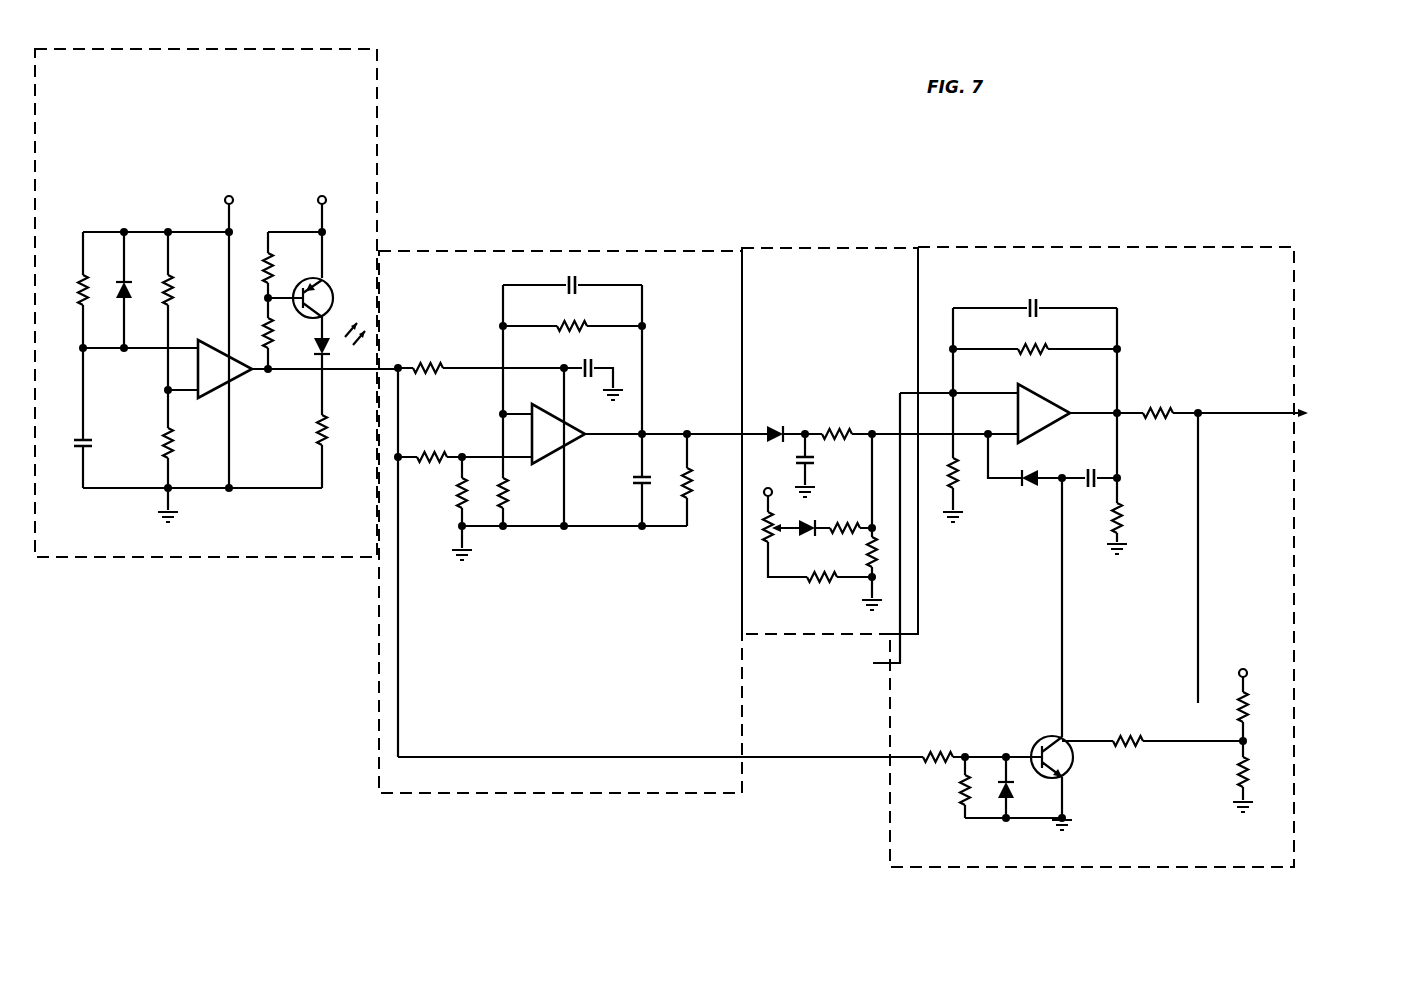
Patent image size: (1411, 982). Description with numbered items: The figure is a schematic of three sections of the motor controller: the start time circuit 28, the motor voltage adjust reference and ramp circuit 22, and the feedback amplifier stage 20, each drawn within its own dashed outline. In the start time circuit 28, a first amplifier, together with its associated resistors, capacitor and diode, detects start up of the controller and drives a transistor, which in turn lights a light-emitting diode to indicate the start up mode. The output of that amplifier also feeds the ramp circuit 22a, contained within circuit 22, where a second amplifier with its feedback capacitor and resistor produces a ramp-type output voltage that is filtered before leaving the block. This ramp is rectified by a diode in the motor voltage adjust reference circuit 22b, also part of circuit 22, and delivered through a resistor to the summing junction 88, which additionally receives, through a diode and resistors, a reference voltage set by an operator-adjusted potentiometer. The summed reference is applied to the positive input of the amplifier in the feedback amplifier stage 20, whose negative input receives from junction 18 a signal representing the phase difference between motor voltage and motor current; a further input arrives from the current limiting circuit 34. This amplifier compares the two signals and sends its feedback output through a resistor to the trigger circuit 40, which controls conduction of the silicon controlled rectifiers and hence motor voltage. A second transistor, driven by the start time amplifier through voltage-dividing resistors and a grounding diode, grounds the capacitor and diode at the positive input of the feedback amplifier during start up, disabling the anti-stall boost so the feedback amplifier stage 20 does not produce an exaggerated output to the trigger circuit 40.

The start time circuit 28 is at (205, 557).
The motor voltage adjust reference and ramp circuit 22 is at (768, 228).
The ramp circuit 22a is at (565, 248).
The motor voltage adjust reference circuit 22b is at (835, 248).
The feedback amplifier stage 20 is at (1131, 248).
The summing junction 88 is at (872, 432).
The junction 18 is at (900, 663).
The current limiting circuit 34 is at (1198, 703).
The trigger circuit 40 is at (1350, 416).